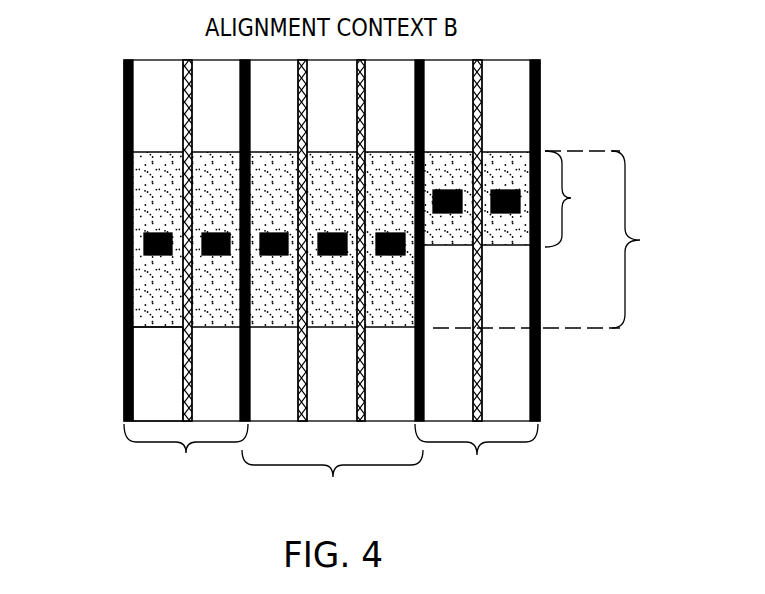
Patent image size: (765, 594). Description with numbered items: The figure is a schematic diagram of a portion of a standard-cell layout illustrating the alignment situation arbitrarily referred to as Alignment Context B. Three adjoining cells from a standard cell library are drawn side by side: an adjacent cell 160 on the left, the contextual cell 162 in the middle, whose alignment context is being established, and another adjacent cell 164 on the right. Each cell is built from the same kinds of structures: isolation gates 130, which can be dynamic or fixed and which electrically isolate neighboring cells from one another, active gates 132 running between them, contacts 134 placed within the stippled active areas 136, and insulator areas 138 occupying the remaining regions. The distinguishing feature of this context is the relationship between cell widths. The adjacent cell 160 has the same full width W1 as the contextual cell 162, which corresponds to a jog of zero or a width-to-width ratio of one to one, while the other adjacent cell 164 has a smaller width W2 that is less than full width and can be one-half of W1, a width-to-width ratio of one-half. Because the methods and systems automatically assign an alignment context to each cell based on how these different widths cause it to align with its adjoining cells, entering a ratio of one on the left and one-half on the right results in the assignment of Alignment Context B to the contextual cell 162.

The isolation gate 130 is at (124, 83).
The active gate 132 is at (183, 128).
The contact 134 is at (149, 233).
The active area 136 is at (144, 301).
The insulator area 138 is at (143, 373).
The adjacent cell 160 is at (186, 454).
The contextual cell 162 is at (332, 479).
The adjacent cell 164 is at (476, 454).
The full width W1 is at (649, 239).
The reduced width W2 is at (582, 199).